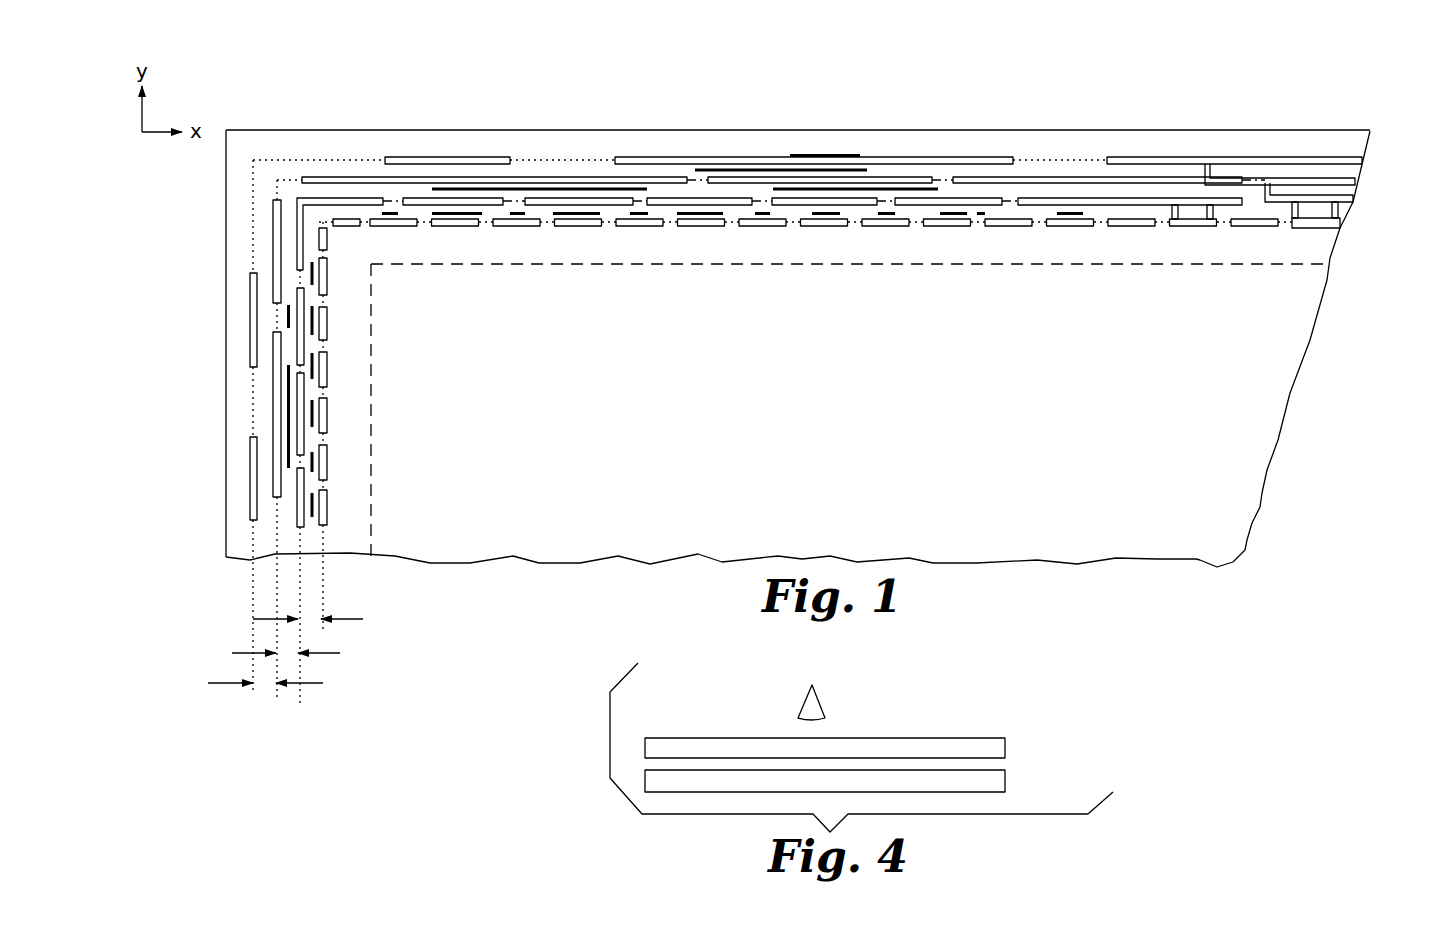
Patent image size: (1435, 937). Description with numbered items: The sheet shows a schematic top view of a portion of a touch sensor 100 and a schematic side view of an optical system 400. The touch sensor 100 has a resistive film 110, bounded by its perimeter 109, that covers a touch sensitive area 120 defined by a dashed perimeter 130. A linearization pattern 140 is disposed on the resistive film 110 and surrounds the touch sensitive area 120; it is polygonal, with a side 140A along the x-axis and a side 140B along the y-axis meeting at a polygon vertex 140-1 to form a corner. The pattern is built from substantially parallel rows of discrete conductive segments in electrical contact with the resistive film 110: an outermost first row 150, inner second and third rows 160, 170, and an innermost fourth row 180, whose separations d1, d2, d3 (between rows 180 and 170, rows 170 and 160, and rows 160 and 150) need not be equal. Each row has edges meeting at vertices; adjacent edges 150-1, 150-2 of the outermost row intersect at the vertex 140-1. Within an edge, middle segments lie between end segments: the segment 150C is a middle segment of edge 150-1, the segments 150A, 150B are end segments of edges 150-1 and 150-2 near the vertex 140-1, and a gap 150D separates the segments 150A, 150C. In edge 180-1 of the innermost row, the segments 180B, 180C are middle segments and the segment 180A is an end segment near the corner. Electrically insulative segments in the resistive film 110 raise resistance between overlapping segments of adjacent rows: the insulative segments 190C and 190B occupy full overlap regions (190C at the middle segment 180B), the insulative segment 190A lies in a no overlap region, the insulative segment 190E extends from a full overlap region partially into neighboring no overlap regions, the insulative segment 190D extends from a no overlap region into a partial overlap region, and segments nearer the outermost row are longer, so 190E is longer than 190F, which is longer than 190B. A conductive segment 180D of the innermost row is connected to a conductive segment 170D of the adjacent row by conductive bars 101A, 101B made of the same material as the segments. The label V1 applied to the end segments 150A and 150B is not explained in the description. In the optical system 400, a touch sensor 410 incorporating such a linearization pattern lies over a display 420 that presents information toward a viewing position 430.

In FIG. 1, the touch sensor 100 is at (1332, 95).
In FIG. 1, the perimeter of resistive film 109 is at (1253, 130).
In FIG. 1, the resistive film 110 is at (1268, 441).
In FIG. 1, the touch sensitive area 120 is at (1302, 341).
In FIG. 1, the perimeter 130 is at (1163, 264).
In FIG. 1, the linearization pattern 140 is at (1343, 193).
In FIG. 1, the polygon vertex 140-1 is at (300, 197).
In FIG. 1, the side of linearization pattern 140A is at (1090, 168).
In FIG. 1, the side of linearization pattern 140B is at (272, 413).
In FIG. 1, the first row of discrete conductive segments 150 is at (253, 693).
In FIG. 1, the edge of first row 150-1 is at (1037, 160).
In FIG. 1, the edge of first row 150-2 is at (253, 377).
In FIG. 1, the end conductive segment 150A is at (495, 157).
In FIG. 1, the end conductive segment 150B is at (252, 278).
In FIG. 1, the middle conductive segment 150C is at (812, 157).
In FIG. 1, the gap 150D is at (593, 157).
In FIG. 1, the second row of discrete conductive segments 160 is at (277, 700).
In FIG. 1, the third row of discrete conductive segments 170 is at (300, 703).
In FIG. 1, the conductive segment 170D is at (1277, 203).
In FIG. 1, the fourth row of discrete conductive segments 180 is at (323, 628).
In FIG. 1, the edge of fourth row 180-1 is at (1103, 226).
In FIG. 1, the end conductive segment 180A is at (350, 226).
In FIG. 1, the middle conductive segment 180B is at (711, 226).
In FIG. 1, the middle conductive segment 180C is at (898, 226).
In FIG. 1, the conductive segment 180D is at (1317, 228).
In FIG. 1, the insulative segment 190A is at (763, 214).
In FIG. 1, the insulative segment 190B is at (815, 214).
In FIG. 1, the insulative segment 190C is at (685, 214).
In FIG. 1, the insulative segment 190D is at (981, 214).
In FIG. 1, the insulative segment 190E is at (722, 169).
In FIG. 1, the insulative segment 190F is at (865, 189).
In FIG. 1, the conductive bar 101A is at (1297, 213).
In FIG. 1, the conductive bar 101B is at (1340, 215).
In FIG. 1, the via V1 is at (205, 327).
In FIG. 1, the separation between rows 180 and 170 d1 is at (352, 618).
In FIG. 1, the separation between rows 170 and 160 d2 is at (330, 656).
In FIG. 1, the separation between rows 160 and 150 d3 is at (305, 687).
In FIG. 4, the optical system 400 is at (968, 698).
In FIG. 4, the touch sensor 410 is at (997, 750).
In FIG. 4, the display 420 is at (997, 784).
In FIG. 4, the viewing position 430 is at (817, 698).